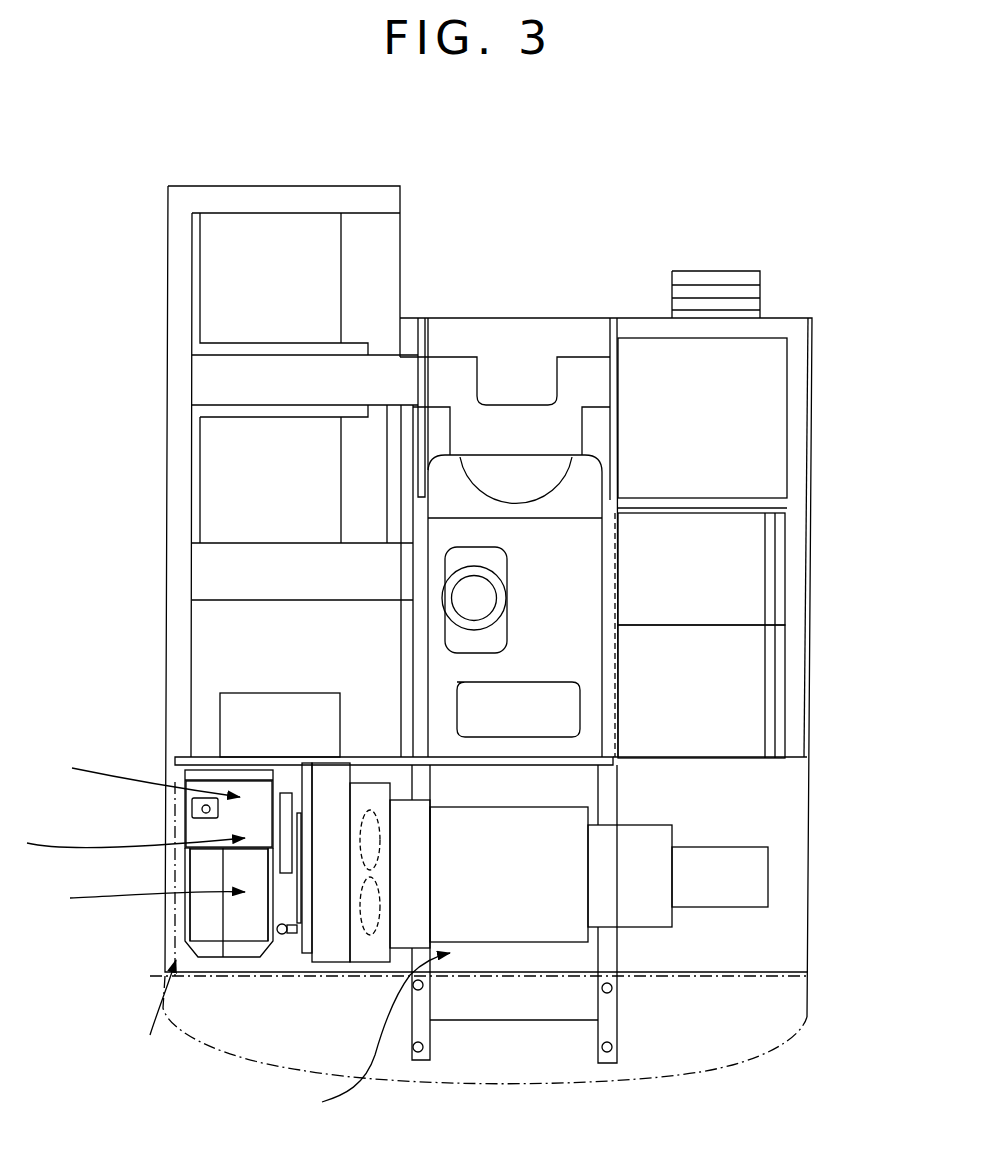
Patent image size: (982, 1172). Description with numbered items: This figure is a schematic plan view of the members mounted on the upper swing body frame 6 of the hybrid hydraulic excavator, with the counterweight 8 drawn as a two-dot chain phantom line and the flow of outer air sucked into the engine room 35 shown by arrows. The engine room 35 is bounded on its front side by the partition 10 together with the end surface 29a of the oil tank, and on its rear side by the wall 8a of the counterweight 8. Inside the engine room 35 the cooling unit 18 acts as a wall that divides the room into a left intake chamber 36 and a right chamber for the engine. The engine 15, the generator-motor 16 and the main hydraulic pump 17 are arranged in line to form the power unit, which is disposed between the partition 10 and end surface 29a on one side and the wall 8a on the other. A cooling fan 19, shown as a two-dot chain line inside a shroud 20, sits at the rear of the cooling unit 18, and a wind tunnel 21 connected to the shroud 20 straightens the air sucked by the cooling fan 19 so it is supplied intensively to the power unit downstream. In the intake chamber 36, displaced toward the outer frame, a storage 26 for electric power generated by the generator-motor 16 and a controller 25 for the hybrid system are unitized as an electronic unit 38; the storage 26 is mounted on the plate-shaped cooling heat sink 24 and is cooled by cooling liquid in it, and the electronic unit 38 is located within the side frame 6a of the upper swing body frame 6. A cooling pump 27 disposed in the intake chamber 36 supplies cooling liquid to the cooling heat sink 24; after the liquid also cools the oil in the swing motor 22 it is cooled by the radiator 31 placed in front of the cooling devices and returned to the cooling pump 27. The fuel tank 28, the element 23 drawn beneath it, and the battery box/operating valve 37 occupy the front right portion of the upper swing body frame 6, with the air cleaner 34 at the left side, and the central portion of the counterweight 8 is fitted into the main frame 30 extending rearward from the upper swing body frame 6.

The upper swing body frame 6 is at (770, 938).
The side frame 6a is at (175, 782).
The counterweight 8 is at (730, 1045).
The wall 8a is at (722, 982).
The partition 10 is at (567, 765).
The engine 15 is at (494, 890).
The generator-motor 16 is at (615, 890).
The main hydraulic pump 17 is at (705, 892).
The cooling unit 18 is at (316, 872).
The cooling fan 19 is at (367, 910).
The shroud 20 is at (373, 785).
The wind tunnel 21 is at (397, 872).
The swing motor 22 is at (461, 613).
The unit 23 is at (682, 702).
The cooling heat sink 24 is at (262, 828).
The controller 25 is at (240, 917).
The storage 26 is at (262, 822).
The cooling pump 27 is at (192, 803).
The fuel tank 28 is at (682, 585).
The end surface 29a is at (697, 759).
The main frame 30 is at (603, 1012).
The radiator 31 is at (285, 865).
The air cleaner 34 is at (262, 735).
The engine room 35 is at (369, 1037).
The intake chamber 36 is at (149, 1013).
The battery box/operating valve 37 is at (687, 432).
The electronic unit 38 is at (46, 862).